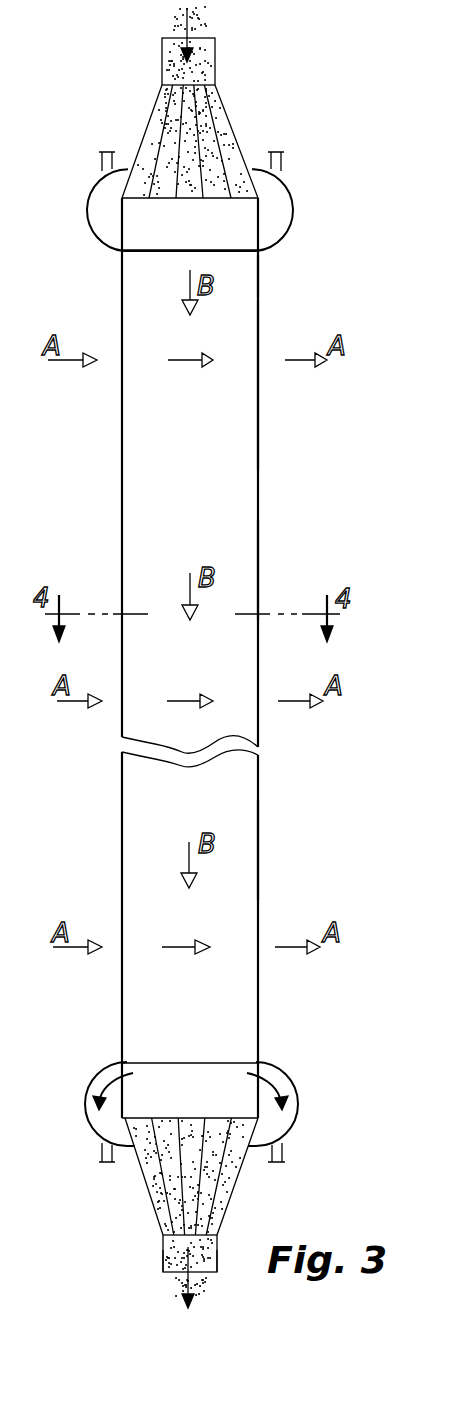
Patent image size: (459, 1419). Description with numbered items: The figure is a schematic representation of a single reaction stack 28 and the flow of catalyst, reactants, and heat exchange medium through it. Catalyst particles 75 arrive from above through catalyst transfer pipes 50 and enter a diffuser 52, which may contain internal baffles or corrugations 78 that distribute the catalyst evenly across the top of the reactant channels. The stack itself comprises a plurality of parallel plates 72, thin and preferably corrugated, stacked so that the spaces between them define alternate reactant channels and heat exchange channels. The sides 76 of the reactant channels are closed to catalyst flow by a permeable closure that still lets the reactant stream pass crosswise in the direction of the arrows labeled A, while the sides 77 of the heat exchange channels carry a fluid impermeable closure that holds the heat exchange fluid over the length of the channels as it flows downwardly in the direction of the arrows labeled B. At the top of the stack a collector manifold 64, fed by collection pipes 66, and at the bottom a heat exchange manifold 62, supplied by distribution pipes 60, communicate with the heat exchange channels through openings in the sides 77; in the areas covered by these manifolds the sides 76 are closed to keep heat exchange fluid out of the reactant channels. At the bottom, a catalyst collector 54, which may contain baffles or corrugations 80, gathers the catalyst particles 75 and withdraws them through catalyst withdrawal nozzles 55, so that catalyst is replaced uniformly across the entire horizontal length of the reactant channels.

The reaction stack 28 is at (268, 520).
The catalyst transfer pipes 50 is at (162, 58).
The diffuser 52 is at (143, 140).
The catalyst collector 54 is at (153, 1210).
The catalyst withdrawal nozzles 55 is at (163, 1255).
The distribution pipes 60 is at (100, 1147).
The heat exchange manifold 62 is at (105, 1065).
The collector manifold 64 is at (82, 218).
The collection pipes 66 is at (99, 157).
The parallel plates 72 is at (236, 346).
The catalyst particles 75 is at (215, 56).
The sides of reactant flow channels 76 is at (323, 460).
The sides of heat exchange channels 77 is at (259, 376).
The baffles or corrugations 78 is at (220, 140).
The baffles or corrugations 80 is at (158, 1163).